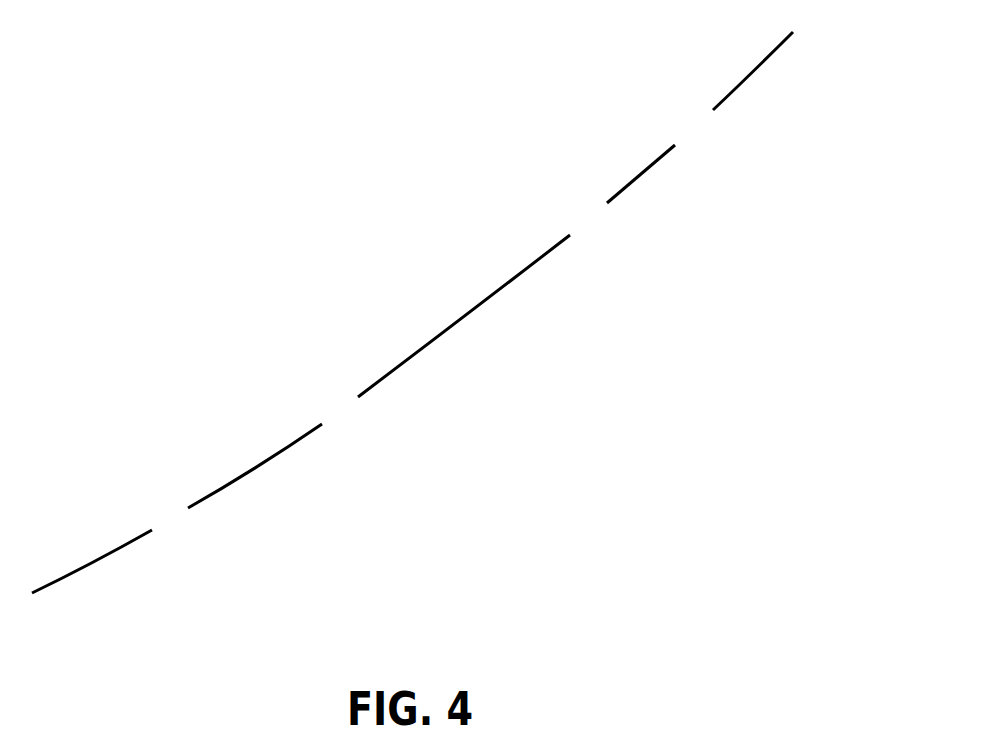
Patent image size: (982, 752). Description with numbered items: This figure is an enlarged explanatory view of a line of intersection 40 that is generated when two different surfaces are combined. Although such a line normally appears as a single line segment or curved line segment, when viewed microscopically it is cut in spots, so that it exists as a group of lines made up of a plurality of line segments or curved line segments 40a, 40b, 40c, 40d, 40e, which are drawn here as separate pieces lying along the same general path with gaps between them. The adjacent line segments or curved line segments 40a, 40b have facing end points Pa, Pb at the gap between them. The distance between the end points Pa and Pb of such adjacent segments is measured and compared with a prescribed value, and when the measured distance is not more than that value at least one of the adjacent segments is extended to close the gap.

The line of intersection 40 is at (412, 309).
The line segment or curved line segment 40a is at (762, 63).
The line segment or curved line segment 40b is at (642, 173).
The line segment or curved line segment 40c is at (487, 300).
The line segment or curved line segment 40d is at (262, 462).
The line segment or curved line segment 40e is at (95, 557).
The end point Pa is at (713, 113).
The end point Pb is at (675, 142).